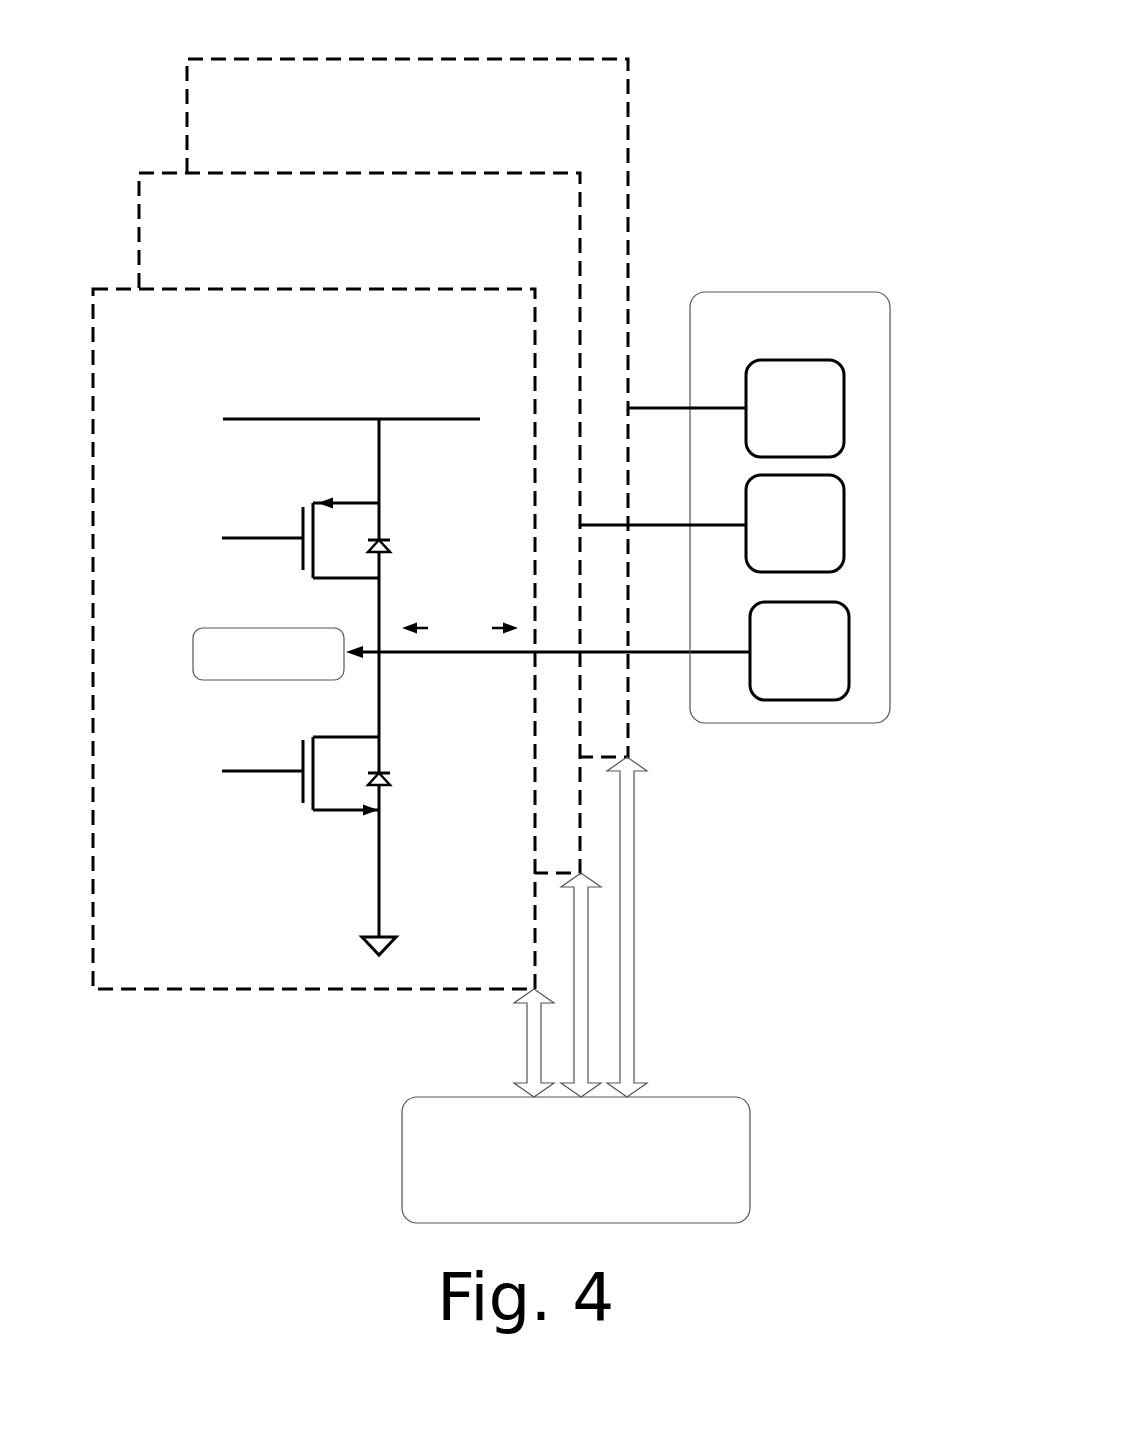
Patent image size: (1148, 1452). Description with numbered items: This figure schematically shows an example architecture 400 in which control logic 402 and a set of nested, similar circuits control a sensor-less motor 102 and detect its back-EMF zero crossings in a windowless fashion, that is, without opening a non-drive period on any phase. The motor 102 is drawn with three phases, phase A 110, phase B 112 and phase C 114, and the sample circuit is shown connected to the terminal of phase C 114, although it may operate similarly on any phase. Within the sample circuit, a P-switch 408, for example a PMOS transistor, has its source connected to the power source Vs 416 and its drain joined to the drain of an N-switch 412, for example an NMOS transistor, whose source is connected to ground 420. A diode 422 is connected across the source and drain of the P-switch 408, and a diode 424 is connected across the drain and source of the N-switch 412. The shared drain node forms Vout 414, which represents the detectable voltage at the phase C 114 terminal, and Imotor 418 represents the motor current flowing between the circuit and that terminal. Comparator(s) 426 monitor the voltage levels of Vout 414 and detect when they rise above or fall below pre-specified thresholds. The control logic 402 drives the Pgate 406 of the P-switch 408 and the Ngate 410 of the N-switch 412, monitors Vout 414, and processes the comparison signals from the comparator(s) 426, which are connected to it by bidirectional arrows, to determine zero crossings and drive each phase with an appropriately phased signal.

The architecture 400 is at (848, 14).
The control logic 402 is at (576, 990).
The Pgate 406 is at (222, 550).
The P-switch 408 is at (292, 499).
The Ngate 410 is at (222, 783).
The N-switch 412 is at (292, 732).
The Vout 414 is at (388, 671).
The power source Vs 416 is at (351, 395).
The Imotor 418 is at (460, 626).
The ground 420 is at (418, 924).
The diode 422 is at (414, 545).
The diode 424 is at (412, 778).
The comparator(s) 426 is at (268, 654).
The sensor-less motor 102 is at (790, 507).
The phase A 110 is at (736, 408).
The phase B 112 is at (712, 523).
The phase C 114 is at (799, 651).